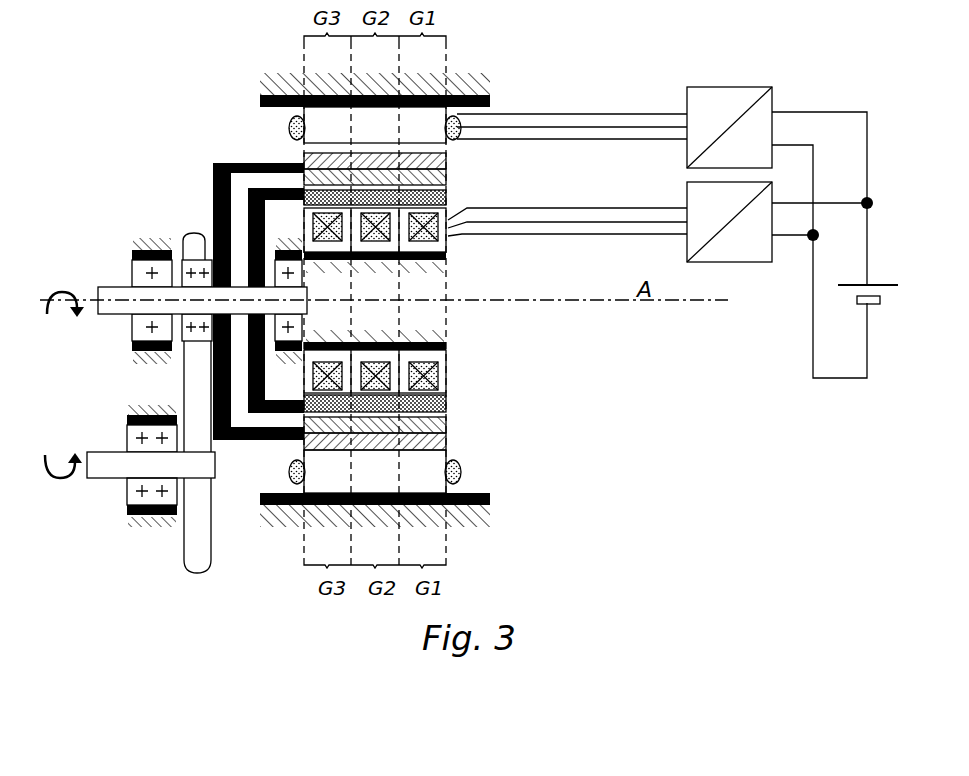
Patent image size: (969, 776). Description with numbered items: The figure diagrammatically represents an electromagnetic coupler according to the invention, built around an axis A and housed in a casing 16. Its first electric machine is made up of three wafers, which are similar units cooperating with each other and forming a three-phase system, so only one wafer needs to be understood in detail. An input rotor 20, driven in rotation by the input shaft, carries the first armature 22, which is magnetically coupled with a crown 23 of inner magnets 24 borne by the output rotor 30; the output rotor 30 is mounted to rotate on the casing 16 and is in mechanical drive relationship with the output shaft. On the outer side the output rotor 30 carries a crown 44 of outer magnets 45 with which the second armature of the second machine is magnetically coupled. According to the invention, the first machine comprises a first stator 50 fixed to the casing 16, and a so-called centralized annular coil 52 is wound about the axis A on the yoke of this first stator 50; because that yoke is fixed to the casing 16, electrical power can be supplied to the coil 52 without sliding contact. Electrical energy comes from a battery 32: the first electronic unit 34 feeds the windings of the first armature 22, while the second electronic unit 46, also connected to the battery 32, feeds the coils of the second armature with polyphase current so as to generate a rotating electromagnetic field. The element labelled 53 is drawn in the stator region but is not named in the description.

The casing 16 is at (418, 267).
The input rotor 20 is at (265, 381).
The first armature 22 is at (414, 374).
The crown of inner magnets 23 is at (464, 176).
The inner magnets 24 is at (447, 425).
The output rotor 30 is at (212, 188).
The battery 32 is at (890, 298).
The first electronic unit 34 is at (746, 258).
The crown of outer magnets 44 is at (464, 162).
The outer magnets 45 is at (447, 441).
The second electronic unit 46 is at (729, 94).
The first stator 50 is at (464, 248).
The centralized annular coil 52 is at (440, 372).
The stator tooth layer 53 is at (427, 336).